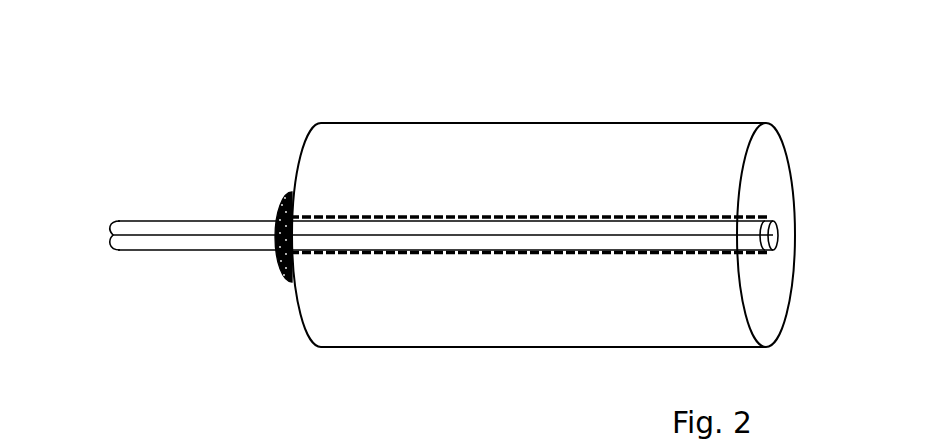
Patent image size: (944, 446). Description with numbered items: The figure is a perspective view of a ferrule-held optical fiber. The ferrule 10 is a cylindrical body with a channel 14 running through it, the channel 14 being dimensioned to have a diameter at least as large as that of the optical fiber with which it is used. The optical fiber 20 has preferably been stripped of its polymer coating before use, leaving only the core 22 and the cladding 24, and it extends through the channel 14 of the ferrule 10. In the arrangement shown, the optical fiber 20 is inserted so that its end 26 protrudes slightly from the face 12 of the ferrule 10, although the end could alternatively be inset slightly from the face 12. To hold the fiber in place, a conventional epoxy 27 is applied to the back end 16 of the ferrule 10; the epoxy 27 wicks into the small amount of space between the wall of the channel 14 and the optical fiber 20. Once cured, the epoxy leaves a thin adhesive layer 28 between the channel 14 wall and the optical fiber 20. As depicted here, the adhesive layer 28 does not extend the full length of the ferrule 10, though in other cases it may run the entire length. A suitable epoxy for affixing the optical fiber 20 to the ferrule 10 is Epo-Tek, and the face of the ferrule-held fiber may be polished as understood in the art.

The ferrule 10 is at (624, 66).
The face 12 is at (780, 175).
The channel 14 is at (513, 263).
The back end 16 is at (281, 312).
The optical fiber 20 is at (224, 204).
The core 22 is at (132, 240).
The cladding 24 is at (106, 224).
The end 26 is at (784, 229).
The epoxy 27 is at (271, 199).
The adhesive layer 28 is at (407, 211).